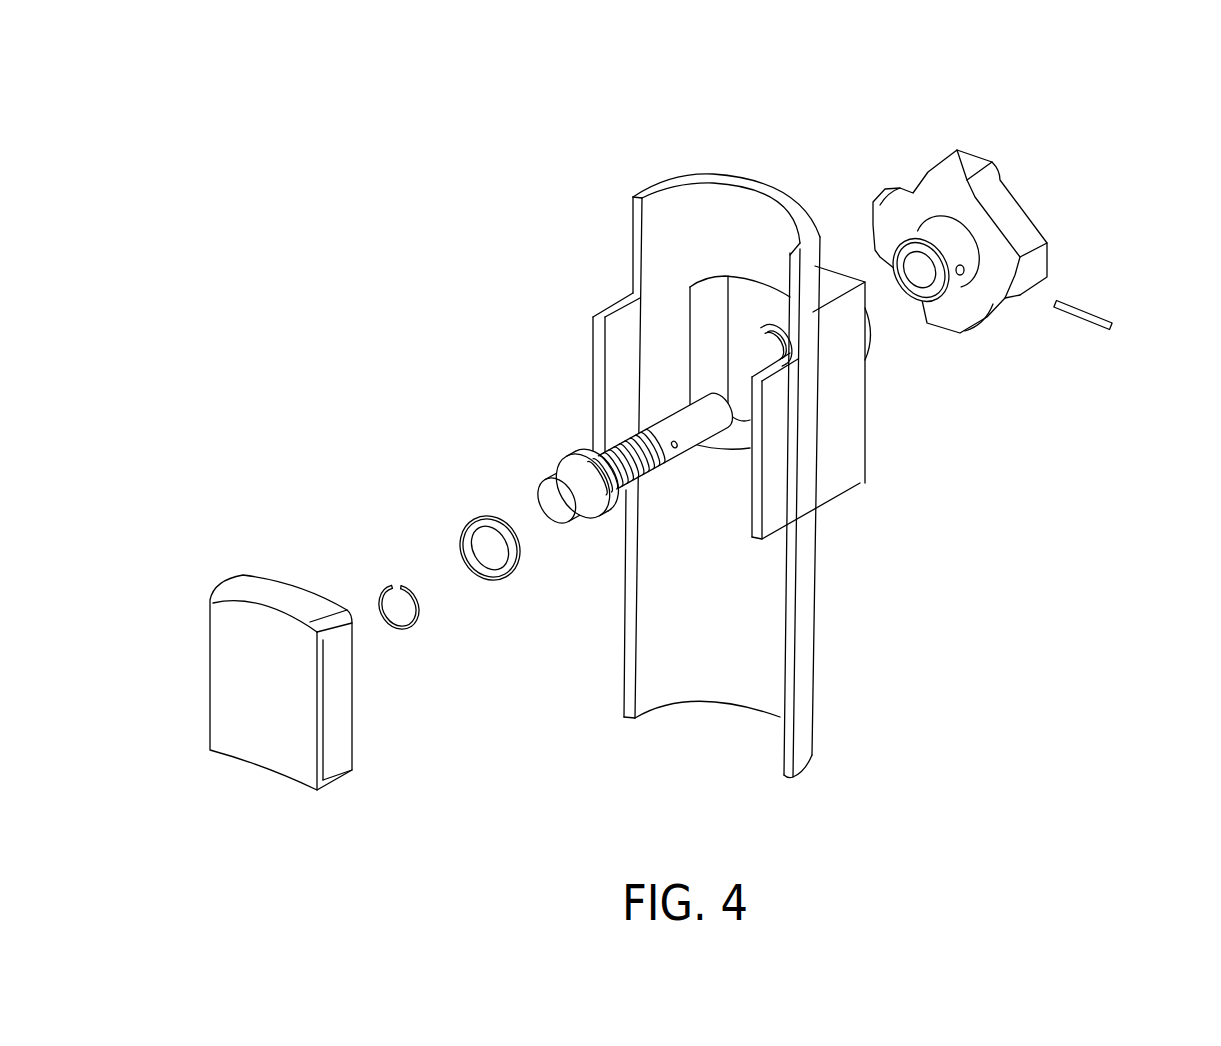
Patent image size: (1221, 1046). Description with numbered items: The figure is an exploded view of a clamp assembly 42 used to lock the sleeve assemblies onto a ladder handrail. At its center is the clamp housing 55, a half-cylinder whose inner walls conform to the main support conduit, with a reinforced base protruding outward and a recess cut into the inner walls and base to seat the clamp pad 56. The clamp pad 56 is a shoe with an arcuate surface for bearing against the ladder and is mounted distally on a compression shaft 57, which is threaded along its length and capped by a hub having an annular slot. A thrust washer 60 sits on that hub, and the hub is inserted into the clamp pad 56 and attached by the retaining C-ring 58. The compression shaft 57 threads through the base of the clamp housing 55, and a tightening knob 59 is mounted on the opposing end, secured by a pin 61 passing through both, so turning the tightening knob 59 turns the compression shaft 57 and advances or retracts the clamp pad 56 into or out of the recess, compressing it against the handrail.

The clamp assembly 42 is at (338, 244).
The clamp housing 55 is at (836, 451).
The clamp pad 56 is at (340, 730).
The compression shaft 57 is at (562, 452).
The retaining C-ring 58 is at (415, 625).
The tightening knob 59 is at (980, 153).
The thrust washer 60 is at (512, 578).
The pin 61 is at (1092, 310).